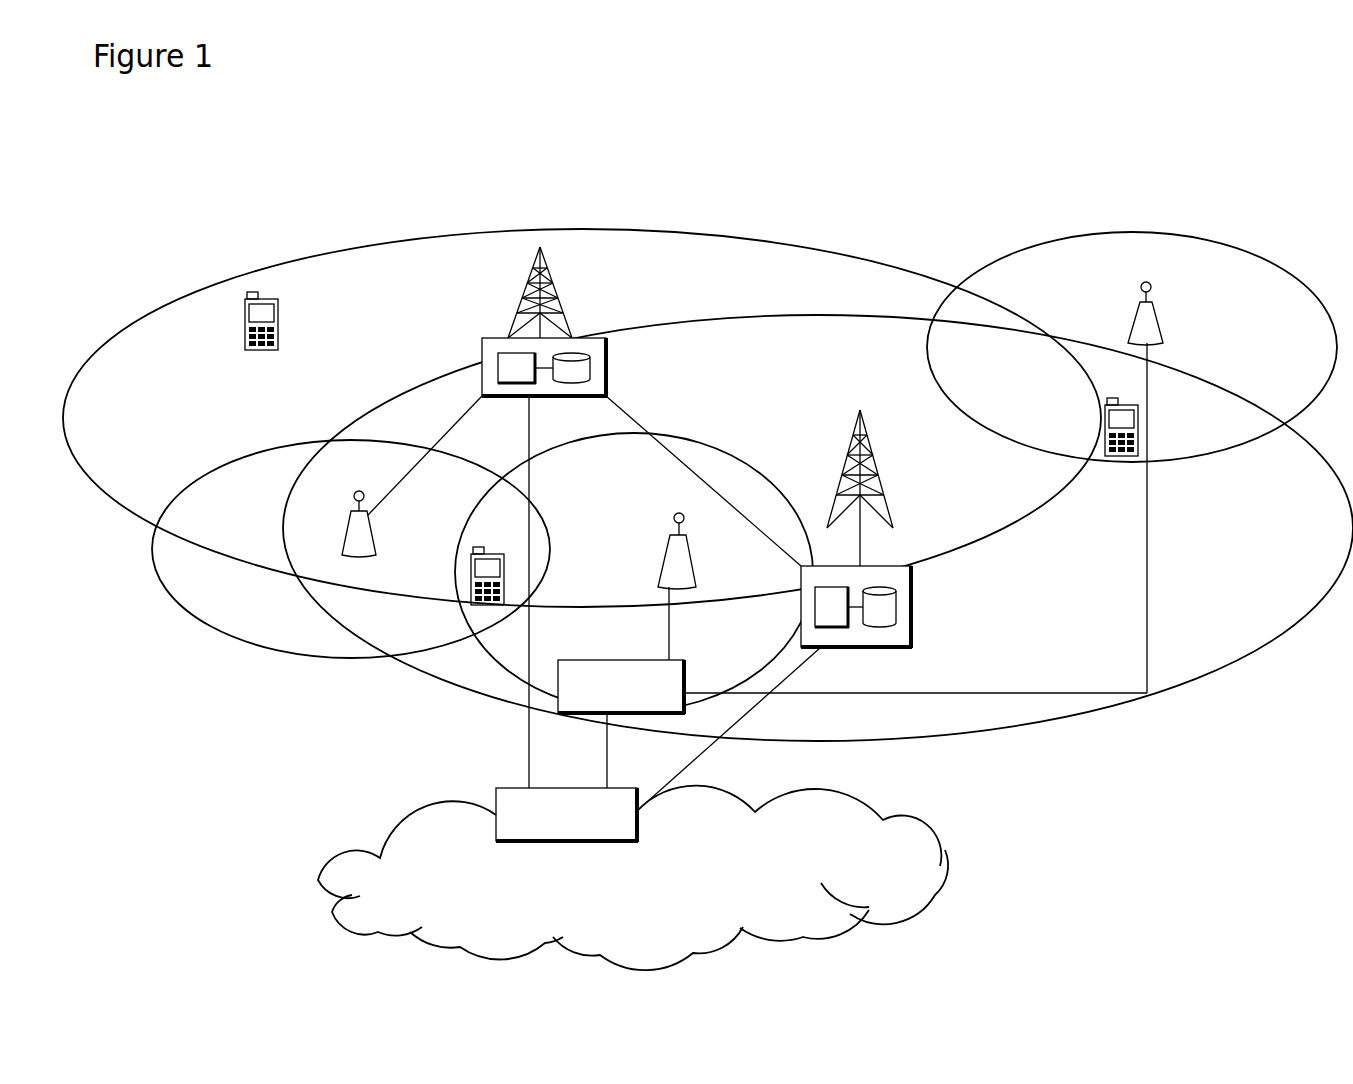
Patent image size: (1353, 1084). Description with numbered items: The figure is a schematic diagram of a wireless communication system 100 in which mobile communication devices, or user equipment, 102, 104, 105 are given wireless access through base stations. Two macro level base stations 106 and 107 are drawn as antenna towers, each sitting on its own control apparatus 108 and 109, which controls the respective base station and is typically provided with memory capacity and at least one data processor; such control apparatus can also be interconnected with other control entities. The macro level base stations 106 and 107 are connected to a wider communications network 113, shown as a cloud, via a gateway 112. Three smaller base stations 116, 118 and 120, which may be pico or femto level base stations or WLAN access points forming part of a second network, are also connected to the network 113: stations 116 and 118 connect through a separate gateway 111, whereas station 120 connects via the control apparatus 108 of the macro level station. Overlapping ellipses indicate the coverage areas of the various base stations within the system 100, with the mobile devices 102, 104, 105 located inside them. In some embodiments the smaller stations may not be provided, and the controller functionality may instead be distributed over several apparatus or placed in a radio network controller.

The wireless communication system 100 is at (158, 278).
The mobile communication device 102 is at (243, 340).
The mobile communication device 104 is at (470, 580).
The mobile communication device 105 is at (1122, 457).
The macro level base station 106 is at (520, 300).
The macro level base station 107 is at (883, 491).
The control apparatus 108 is at (482, 352).
The control apparatus 109 is at (900, 634).
The gateway 111 is at (567, 694).
The gateway 112 is at (496, 786).
The wider communications network 113 is at (413, 852).
The smaller base station 116 is at (1130, 317).
The smaller base station 118 is at (678, 568).
The smaller base station 120 is at (347, 527).